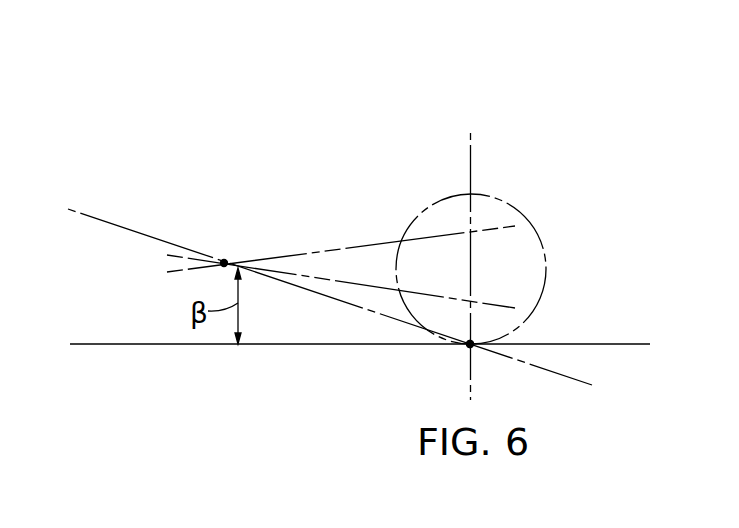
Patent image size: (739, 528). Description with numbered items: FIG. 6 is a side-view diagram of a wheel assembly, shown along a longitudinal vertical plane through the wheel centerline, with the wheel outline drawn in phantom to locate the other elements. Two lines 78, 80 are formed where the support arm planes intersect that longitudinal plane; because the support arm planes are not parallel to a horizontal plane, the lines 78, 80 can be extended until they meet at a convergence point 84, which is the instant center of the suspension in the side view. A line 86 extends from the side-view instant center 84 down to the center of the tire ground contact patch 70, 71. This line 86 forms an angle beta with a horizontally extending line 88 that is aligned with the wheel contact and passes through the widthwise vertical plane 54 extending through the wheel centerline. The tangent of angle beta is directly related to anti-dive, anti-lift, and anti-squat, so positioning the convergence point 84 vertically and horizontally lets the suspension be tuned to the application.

The vertical plane 54 is at (470, 179).
The tire ground contact patch 70 is at (467, 347).
The tire ground contact patch 71 is at (470, 344).
The support arm plane intersection line 78 is at (490, 228).
The support arm plane intersection line 80 is at (505, 305).
The convergence point 84 is at (225, 258).
The line 86 is at (98, 222).
The horizontally extending line 88 is at (590, 344).